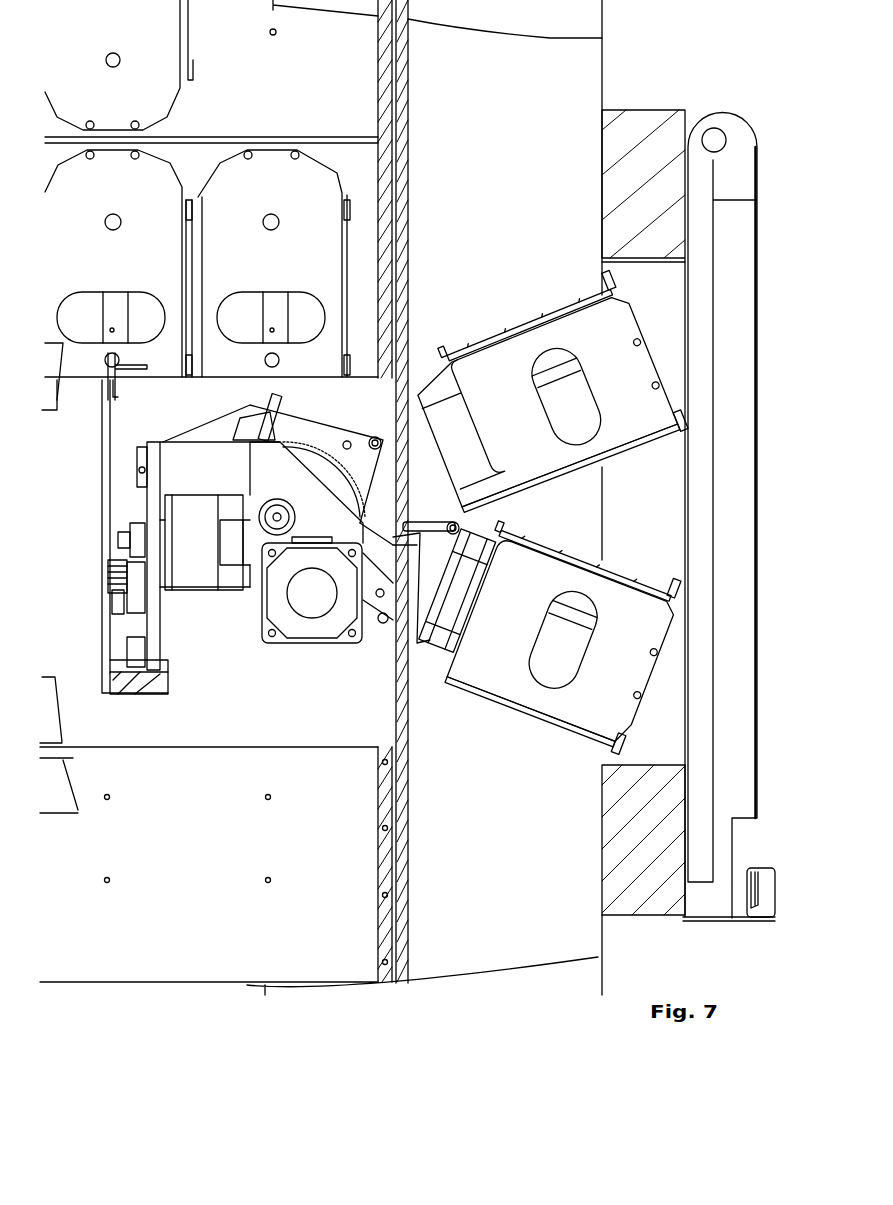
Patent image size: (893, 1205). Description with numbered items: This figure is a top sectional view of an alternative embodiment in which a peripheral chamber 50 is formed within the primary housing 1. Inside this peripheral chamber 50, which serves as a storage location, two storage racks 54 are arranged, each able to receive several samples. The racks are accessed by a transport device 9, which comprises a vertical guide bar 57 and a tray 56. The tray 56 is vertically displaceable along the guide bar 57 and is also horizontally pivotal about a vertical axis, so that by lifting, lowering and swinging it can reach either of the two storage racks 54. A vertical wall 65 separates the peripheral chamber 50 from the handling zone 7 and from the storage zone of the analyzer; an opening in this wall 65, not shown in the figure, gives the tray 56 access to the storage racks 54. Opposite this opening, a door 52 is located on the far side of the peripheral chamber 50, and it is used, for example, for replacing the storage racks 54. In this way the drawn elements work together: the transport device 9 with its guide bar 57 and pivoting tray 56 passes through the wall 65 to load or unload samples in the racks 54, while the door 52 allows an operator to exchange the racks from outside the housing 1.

The primary housing 1 is at (603, 92).
The peripheral chamber 50 is at (521, 234).
The door 52 is at (743, 283).
The storage racks 54 is at (653, 408).
The tray 56 is at (462, 593).
The handling zone 7 is at (58, 526).
The vertical guide bar 57 is at (127, 687).
The transport device 9 is at (308, 710).
The vertical wall 65 is at (397, 710).